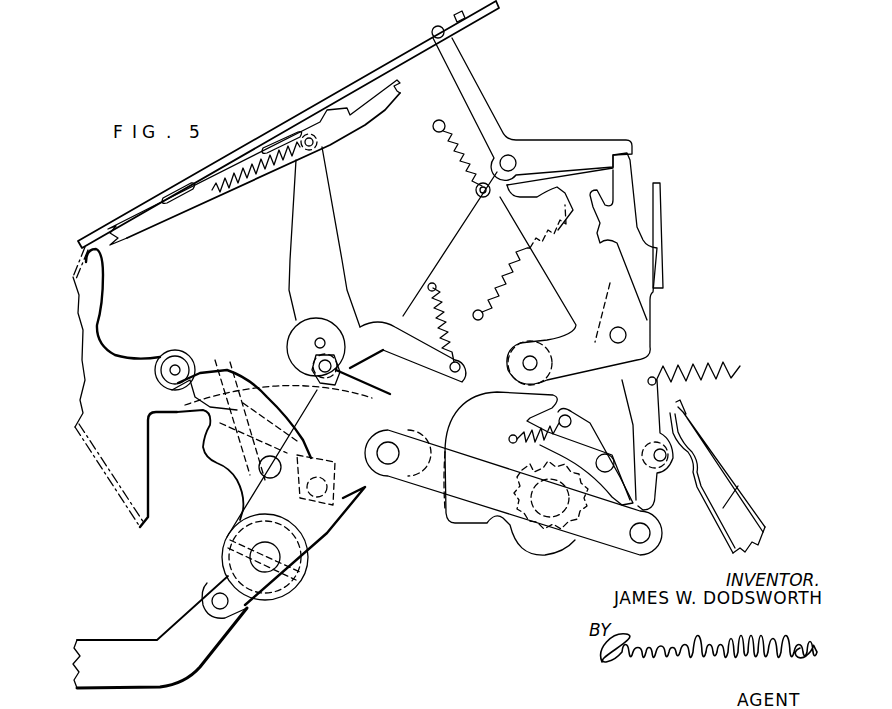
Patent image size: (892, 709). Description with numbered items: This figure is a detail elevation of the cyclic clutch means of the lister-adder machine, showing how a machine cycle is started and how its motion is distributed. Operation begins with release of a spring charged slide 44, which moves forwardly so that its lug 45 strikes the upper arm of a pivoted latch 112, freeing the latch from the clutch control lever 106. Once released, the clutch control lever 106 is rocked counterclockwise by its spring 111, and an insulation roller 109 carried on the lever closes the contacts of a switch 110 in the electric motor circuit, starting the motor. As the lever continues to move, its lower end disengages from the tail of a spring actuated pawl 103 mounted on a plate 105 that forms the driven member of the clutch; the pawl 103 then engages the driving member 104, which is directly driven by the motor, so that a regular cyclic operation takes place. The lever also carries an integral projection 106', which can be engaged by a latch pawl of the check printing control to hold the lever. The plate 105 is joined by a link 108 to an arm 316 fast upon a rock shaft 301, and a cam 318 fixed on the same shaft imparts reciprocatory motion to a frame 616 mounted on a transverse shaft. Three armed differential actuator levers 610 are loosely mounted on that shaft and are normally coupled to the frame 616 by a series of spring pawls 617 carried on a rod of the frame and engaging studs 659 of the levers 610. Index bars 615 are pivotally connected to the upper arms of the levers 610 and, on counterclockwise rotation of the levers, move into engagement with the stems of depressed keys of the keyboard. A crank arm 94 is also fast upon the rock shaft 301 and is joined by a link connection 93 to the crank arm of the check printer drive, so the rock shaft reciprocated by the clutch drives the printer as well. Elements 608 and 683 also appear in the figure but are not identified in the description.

The spring charged slide 44 is at (497, 8).
The lug 45 is at (455, 17).
The pivoted latch 112 is at (484, 108).
The index bars 615 is at (190, 203).
The spring 683 is at (242, 186).
The three armed differential actuator levers 610 is at (326, 236).
The pivot disc 608 is at (317, 340).
The frame 616 is at (406, 314).
The spring pawls 617 is at (210, 432).
The studs 659 is at (208, 338).
The cam 318 is at (226, 463).
The arm 316 is at (328, 530).
The rock shaft 301 is at (270, 565).
The link connection 93 is at (160, 636).
The crank arm 94 is at (247, 612).
The link 108 is at (430, 470).
The plate 105 is at (485, 513).
The spring actuated pawl 103 is at (575, 418).
The driving member 104 is at (548, 558).
The clutch control lever 106 is at (591, 269).
The projection 106' is at (686, 235).
The insulation roller 109 is at (662, 490).
The spring 111 is at (718, 384).
The switch 110 is at (722, 488).